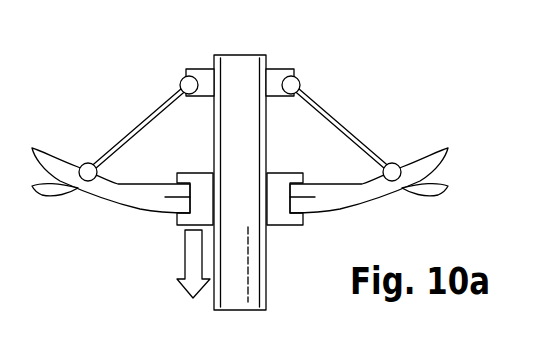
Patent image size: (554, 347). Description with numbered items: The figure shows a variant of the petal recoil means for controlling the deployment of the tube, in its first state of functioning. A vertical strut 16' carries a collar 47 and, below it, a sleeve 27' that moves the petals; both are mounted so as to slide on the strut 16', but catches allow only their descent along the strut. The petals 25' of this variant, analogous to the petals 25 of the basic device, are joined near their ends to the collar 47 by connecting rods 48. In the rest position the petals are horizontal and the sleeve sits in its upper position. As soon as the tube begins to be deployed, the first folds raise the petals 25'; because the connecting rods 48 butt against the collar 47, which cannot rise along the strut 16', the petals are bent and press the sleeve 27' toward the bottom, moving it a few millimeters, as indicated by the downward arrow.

The strut 16' is at (267, 182).
The petals 25 is at (277, 160).
The petals 25' is at (111, 193).
The sleeve 27' is at (348, 225).
The collar 47 is at (200, 69).
The connecting rods 48 is at (143, 121).